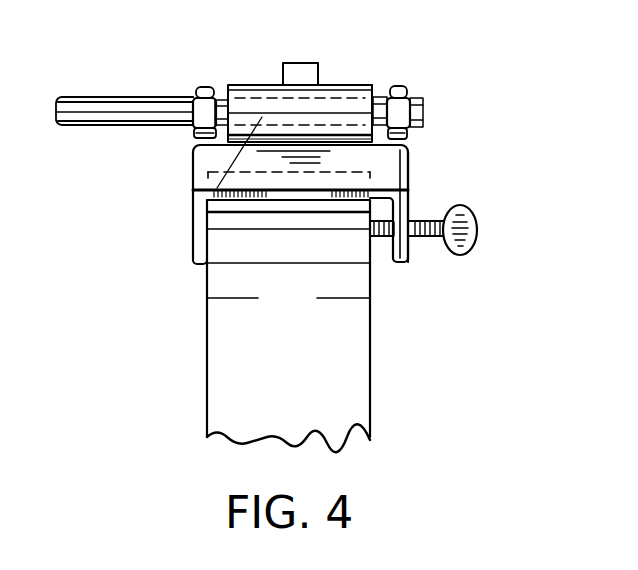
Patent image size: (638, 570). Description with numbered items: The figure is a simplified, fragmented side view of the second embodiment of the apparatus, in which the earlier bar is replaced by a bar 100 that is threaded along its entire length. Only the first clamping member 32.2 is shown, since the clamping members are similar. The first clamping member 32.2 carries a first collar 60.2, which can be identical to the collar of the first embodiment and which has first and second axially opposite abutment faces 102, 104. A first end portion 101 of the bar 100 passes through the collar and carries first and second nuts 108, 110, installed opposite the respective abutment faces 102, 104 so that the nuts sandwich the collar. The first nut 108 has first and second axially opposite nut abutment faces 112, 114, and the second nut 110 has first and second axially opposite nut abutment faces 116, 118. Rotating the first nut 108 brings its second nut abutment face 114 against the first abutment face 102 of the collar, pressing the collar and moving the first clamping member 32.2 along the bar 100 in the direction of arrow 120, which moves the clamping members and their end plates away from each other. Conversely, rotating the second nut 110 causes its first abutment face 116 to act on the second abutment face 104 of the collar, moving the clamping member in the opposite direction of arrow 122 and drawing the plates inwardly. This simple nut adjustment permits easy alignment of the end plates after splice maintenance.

The bar 100 is at (84, 90).
The first end portion 101 is at (177, 96).
The first abutment face 102 is at (228, 92).
The second abutment face 104 is at (377, 85).
The first nut 108 is at (203, 85).
The second nut 110 is at (413, 88).
The first nut abutment face 112 is at (193, 133).
The second nut abutment face 114 is at (224, 146).
The first nut abutment face 116 is at (407, 167).
The second nut abutment face 118 is at (405, 137).
The arrow 120 is at (266, 66).
The arrow 122 is at (336, 66).
The first clamping member 32.2 is at (403, 185).
The first collar 60.2 is at (208, 190).